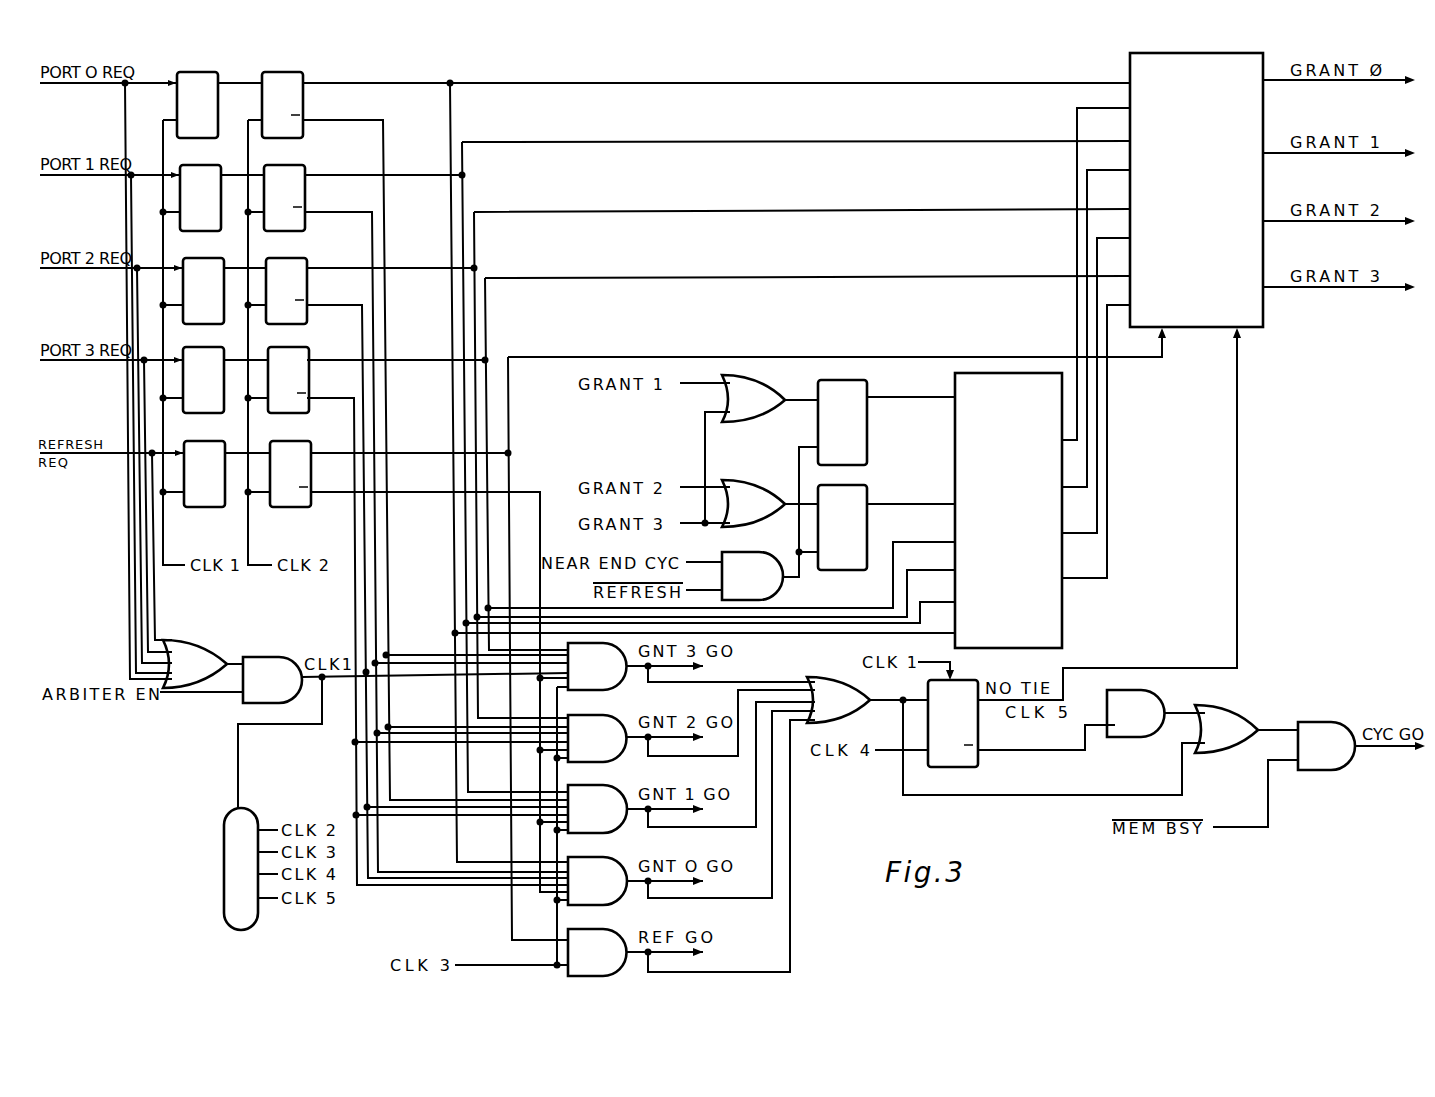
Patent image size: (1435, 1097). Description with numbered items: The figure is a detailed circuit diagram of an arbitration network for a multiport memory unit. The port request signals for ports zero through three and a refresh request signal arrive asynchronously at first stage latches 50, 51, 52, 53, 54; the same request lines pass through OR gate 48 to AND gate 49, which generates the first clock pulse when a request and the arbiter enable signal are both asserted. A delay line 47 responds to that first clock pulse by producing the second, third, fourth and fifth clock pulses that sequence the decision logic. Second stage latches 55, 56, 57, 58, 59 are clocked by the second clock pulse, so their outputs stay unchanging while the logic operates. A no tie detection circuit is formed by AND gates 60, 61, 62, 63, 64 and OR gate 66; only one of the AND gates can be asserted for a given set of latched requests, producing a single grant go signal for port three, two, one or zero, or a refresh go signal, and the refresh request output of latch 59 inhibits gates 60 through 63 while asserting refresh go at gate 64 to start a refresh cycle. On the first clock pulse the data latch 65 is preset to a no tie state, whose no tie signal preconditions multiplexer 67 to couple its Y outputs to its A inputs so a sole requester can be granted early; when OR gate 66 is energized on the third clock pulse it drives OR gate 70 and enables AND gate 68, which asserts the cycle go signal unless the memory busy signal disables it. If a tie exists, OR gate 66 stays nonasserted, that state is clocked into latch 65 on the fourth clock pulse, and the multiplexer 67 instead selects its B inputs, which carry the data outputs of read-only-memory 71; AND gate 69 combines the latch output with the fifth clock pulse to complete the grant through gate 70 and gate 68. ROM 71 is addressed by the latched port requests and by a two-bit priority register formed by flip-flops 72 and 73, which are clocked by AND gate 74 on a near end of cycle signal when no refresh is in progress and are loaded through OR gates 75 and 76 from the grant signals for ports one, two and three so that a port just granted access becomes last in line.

The delay line 47 is at (240, 852).
The OR gate 48 is at (195, 664).
The AND gate 49 is at (272, 680).
The first stage latch 50 is at (197, 105).
The first stage latch 51 is at (200, 198).
The first stage latch 52 is at (203, 291).
The first stage latch 53 is at (203, 380).
The first stage latch 54 is at (204, 474).
The second stage latch 55 is at (282, 105).
The second stage latch 56 is at (284, 198).
The second stage latch 57 is at (286, 291).
The second stage latch 58 is at (288, 380).
The second stage latch 59 is at (290, 474).
The AND gate 60 is at (597, 666).
The AND gate 61 is at (597, 738).
The AND gate 62 is at (597, 809).
The AND gate 63 is at (597, 881).
The AND gate 64 is at (597, 952).
The data latch 65 is at (953, 723).
The OR gate 66 is at (838, 700).
The multiplexer 67 is at (1196, 190).
The AND gate 68 is at (1326, 746).
The AND gate 69 is at (1135, 713).
The OR gate 70 is at (1226, 729).
The read-only-memory 71 is at (1008, 510).
The flip-flop 72 is at (842, 527).
The flip-flop 73 is at (842, 422).
The AND gate 74 is at (752, 576).
The OR gate 75 is at (753, 503).
The OR gate 76 is at (753, 398).